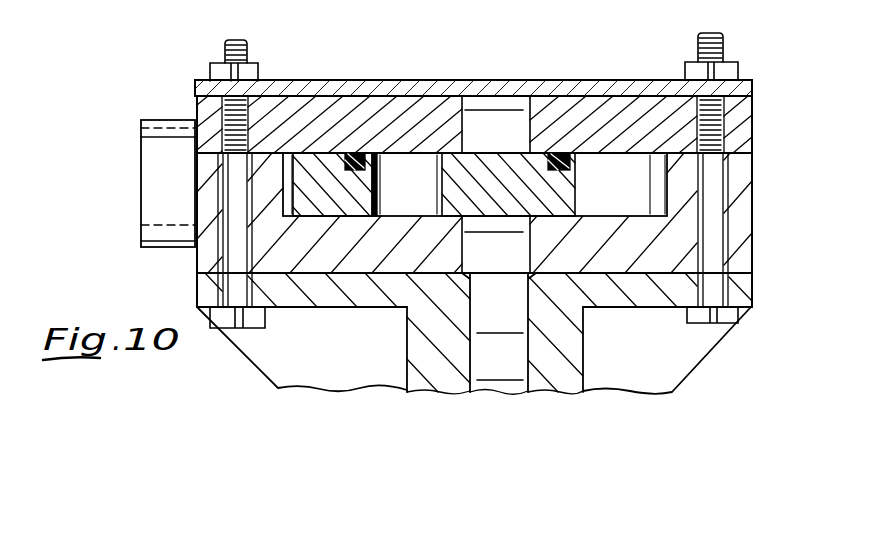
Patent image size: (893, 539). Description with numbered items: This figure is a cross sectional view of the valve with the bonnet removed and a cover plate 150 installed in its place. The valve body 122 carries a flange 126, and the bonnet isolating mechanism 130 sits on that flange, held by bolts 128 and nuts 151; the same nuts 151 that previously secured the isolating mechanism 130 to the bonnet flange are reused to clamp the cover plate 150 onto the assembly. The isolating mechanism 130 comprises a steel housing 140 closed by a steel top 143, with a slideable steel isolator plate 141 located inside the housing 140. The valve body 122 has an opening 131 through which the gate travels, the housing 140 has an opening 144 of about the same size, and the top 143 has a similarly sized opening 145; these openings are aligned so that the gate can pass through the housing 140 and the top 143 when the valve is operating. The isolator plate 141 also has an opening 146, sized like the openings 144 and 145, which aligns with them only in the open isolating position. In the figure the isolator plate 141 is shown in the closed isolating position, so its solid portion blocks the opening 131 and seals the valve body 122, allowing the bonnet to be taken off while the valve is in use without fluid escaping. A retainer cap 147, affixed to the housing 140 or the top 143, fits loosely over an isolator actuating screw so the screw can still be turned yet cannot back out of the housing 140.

The valve body 122 is at (693, 377).
The flange 126 is at (753, 290).
The bolts 128 is at (250, 330).
The bonnet isolating mechanism 130 is at (755, 108).
The opening 131 is at (480, 355).
The housing 140 is at (753, 195).
The isolator plate 141 is at (297, 180).
The top 143 is at (755, 130).
The opening 144 is at (460, 258).
The opening 145 is at (508, 120).
The opening 146 is at (387, 185).
The retainer cap 147 is at (142, 121).
The cover plate 150 is at (195, 82).
The nuts 151 is at (260, 74).